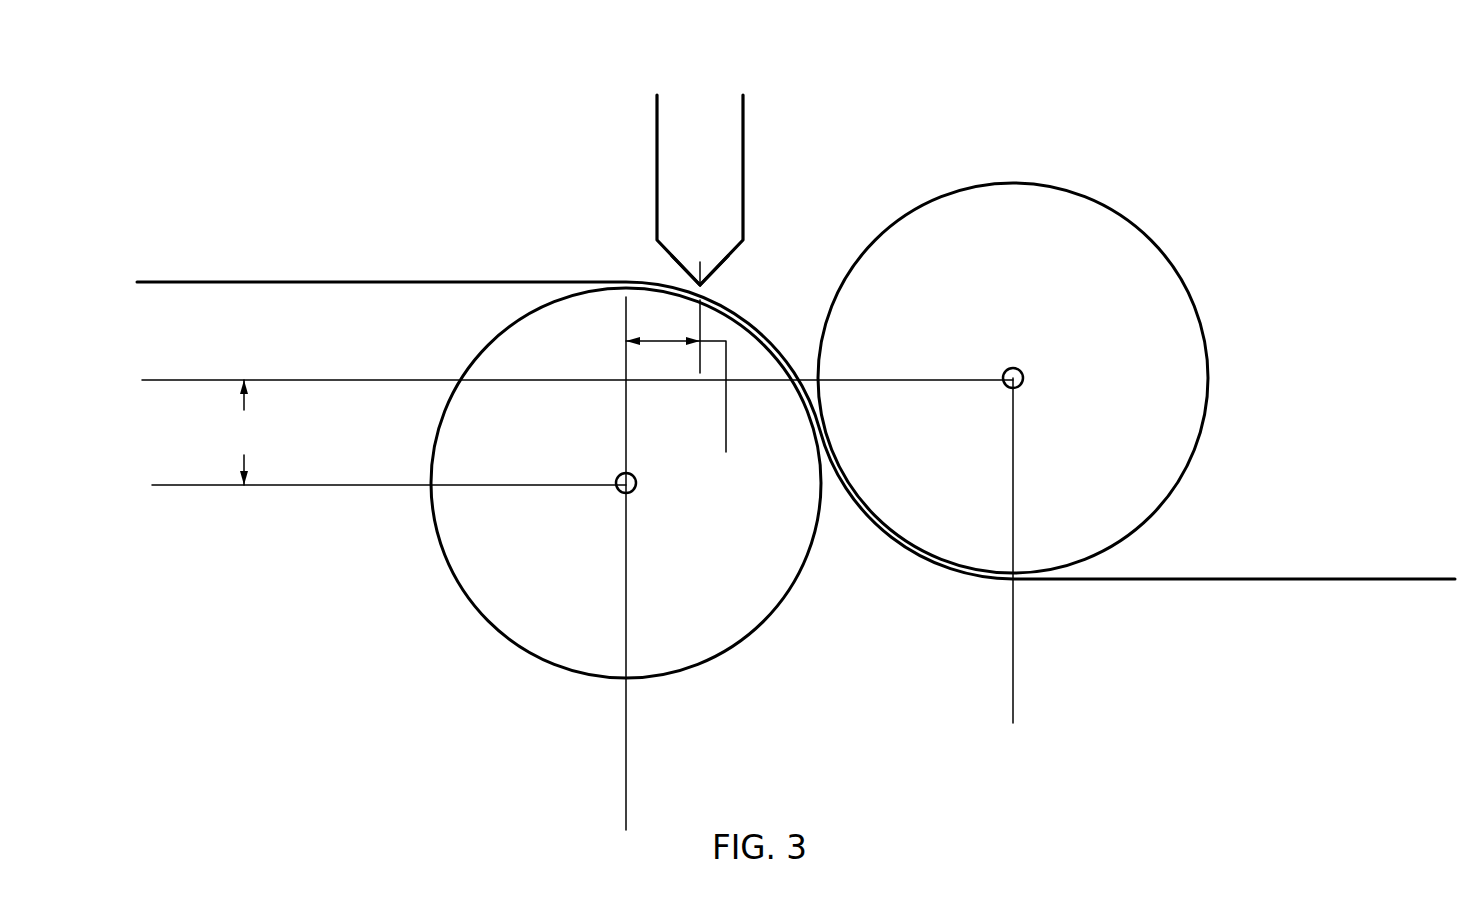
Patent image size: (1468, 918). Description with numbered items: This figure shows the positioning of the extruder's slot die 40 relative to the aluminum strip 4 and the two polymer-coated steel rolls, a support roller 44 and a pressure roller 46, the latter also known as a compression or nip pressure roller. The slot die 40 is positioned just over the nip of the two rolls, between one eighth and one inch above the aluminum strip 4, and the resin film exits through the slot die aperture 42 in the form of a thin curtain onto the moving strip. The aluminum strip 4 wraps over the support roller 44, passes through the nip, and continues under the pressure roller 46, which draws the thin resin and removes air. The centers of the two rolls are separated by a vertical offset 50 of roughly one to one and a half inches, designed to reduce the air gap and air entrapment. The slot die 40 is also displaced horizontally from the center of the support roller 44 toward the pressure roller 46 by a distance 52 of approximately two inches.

The aluminum strip 4 is at (358, 281).
The slot die 40 is at (746, 118).
The slot die aperture 42 is at (697, 268).
The support roller 44 is at (523, 612).
The pressure roller 46 is at (1147, 468).
The vertical offset 50 is at (241, 432).
The horizontal offset of slot die from support roll center 52 is at (690, 381).